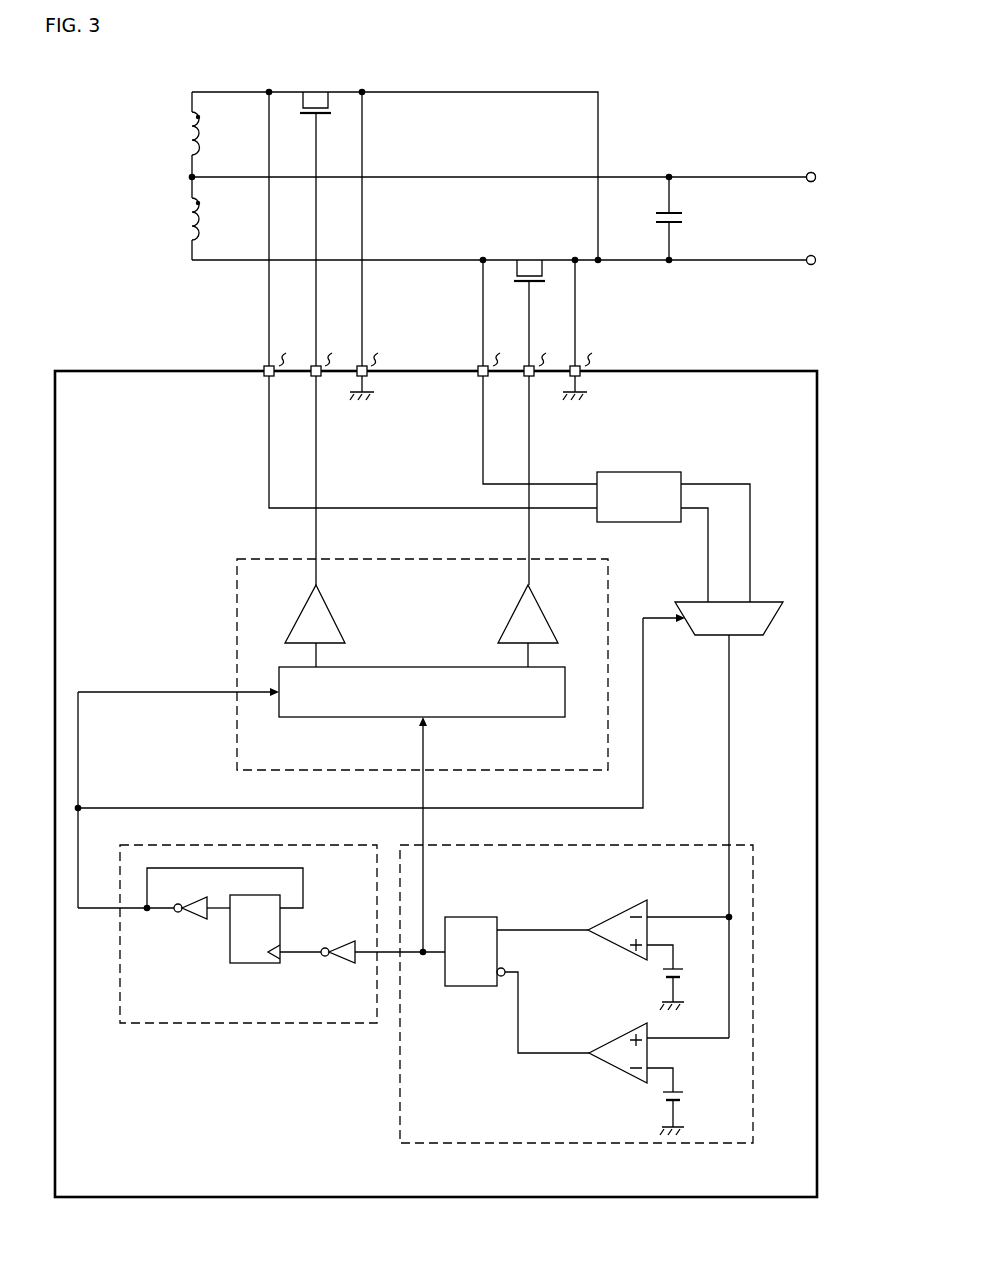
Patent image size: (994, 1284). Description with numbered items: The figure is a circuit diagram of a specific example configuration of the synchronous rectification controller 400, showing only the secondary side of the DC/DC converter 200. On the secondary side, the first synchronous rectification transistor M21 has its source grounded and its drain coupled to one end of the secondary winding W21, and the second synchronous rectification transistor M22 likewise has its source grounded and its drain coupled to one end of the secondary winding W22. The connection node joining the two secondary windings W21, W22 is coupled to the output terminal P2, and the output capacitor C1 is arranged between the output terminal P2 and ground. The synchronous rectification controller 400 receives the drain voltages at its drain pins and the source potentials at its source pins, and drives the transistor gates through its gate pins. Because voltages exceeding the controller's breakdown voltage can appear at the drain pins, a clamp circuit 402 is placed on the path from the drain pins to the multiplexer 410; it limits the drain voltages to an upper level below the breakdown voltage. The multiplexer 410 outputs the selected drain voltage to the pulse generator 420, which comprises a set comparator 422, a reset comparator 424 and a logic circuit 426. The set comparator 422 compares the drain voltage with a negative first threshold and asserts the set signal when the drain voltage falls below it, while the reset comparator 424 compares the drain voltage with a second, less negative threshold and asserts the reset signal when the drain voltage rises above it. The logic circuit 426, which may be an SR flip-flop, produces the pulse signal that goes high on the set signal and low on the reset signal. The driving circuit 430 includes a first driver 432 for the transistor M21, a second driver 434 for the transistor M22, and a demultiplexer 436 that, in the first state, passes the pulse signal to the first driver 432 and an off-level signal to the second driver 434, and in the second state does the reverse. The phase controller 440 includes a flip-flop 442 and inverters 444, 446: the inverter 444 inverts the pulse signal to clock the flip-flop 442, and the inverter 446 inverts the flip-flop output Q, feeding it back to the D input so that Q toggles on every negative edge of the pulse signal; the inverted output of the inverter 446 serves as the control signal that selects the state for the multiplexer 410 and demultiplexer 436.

The DC/DC converter 200 is at (750, 106).
The synchronous rectification controller 400 is at (729, 371).
The clamp circuit 402 is at (646, 473).
The multiplexer 410 is at (763, 604).
The pulse generator 420 is at (577, 1143).
The set comparator 422 is at (606, 918).
The reset comparator 424 is at (606, 1039).
The logic circuit 426 is at (456, 917).
The driving circuit 430 is at (234, 600).
The first driver 432 is at (326, 618).
The second driver 434 is at (540, 618).
The demultiplexer 436 is at (505, 718).
The phase controller 440 is at (293, 1023).
The flip-flop 442 is at (252, 964).
The inverter 444 is at (336, 943).
The inverter 446 is at (196, 921).
The first synchronous rectification transistor M21 is at (314, 90).
The second synchronous rectification transistor M22 is at (527, 256).
The secondary winding W21 is at (180, 134).
The secondary winding W22 is at (180, 220).
The output capacitor C1 is at (690, 218).
The output terminal P2 is at (810, 173).